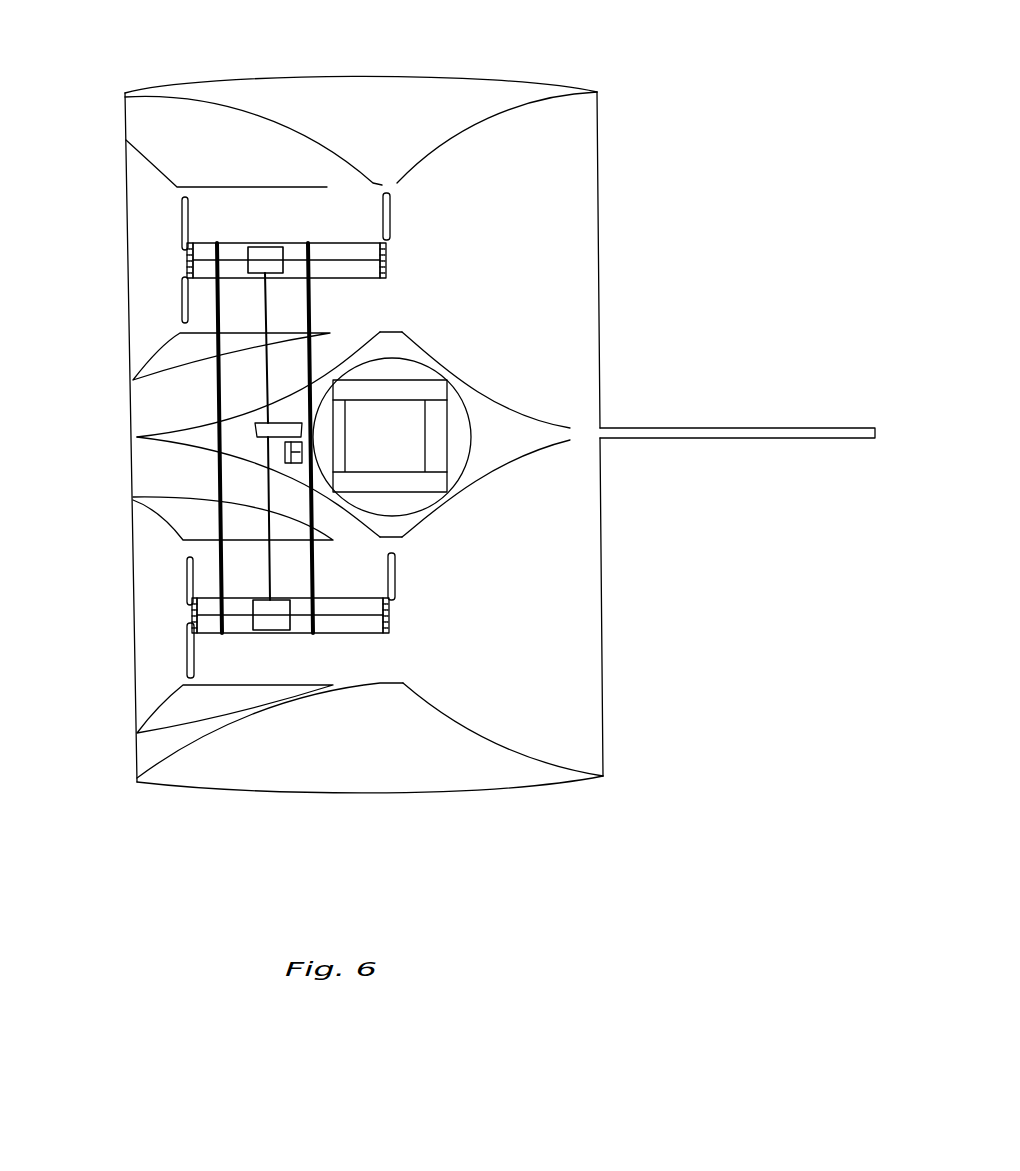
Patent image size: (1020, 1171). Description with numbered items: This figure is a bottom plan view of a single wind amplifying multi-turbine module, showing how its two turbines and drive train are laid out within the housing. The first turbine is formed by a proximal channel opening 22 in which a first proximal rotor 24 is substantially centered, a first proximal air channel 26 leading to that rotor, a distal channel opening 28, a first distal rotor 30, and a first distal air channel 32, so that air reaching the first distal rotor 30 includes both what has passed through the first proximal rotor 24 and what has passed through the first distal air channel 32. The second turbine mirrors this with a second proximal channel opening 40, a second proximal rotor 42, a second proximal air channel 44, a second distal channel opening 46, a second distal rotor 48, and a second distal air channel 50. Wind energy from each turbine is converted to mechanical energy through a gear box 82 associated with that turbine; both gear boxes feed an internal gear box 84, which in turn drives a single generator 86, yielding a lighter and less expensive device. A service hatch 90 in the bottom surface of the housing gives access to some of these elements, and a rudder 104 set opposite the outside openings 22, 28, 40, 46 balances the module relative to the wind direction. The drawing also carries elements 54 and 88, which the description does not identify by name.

The proximal channel opening 22 is at (138, 218).
The first proximal rotor 24 is at (180, 297).
The first proximal air channel 26 is at (210, 200).
The distal channel opening 28 is at (135, 118).
The first distal rotor 30 is at (393, 212).
The first distal air channel 32 is at (312, 140).
The second proximal channel opening 40 is at (148, 577).
The second proximal rotor 42 is at (185, 653).
The second proximal air channel 44 is at (330, 662).
The second distal channel opening 46 is at (162, 757).
The second distal rotor 48 is at (397, 573).
The second distal air channel 50 is at (307, 727).
The central panel 54 is at (158, 508).
The gear box 82 is at (268, 258).
The internal gear box 84 is at (324, 381).
The generator 86 is at (305, 455).
The side wall 88 is at (557, 182).
The service hatch 90 is at (412, 432).
The rudder 104 is at (757, 425).